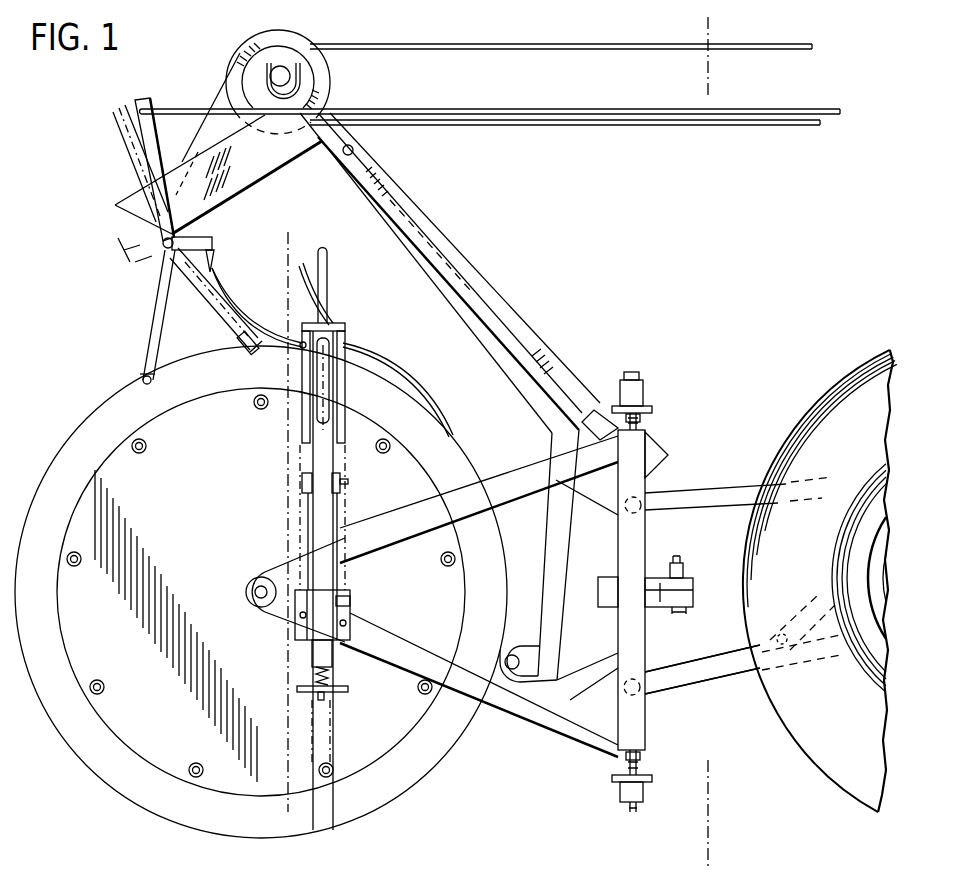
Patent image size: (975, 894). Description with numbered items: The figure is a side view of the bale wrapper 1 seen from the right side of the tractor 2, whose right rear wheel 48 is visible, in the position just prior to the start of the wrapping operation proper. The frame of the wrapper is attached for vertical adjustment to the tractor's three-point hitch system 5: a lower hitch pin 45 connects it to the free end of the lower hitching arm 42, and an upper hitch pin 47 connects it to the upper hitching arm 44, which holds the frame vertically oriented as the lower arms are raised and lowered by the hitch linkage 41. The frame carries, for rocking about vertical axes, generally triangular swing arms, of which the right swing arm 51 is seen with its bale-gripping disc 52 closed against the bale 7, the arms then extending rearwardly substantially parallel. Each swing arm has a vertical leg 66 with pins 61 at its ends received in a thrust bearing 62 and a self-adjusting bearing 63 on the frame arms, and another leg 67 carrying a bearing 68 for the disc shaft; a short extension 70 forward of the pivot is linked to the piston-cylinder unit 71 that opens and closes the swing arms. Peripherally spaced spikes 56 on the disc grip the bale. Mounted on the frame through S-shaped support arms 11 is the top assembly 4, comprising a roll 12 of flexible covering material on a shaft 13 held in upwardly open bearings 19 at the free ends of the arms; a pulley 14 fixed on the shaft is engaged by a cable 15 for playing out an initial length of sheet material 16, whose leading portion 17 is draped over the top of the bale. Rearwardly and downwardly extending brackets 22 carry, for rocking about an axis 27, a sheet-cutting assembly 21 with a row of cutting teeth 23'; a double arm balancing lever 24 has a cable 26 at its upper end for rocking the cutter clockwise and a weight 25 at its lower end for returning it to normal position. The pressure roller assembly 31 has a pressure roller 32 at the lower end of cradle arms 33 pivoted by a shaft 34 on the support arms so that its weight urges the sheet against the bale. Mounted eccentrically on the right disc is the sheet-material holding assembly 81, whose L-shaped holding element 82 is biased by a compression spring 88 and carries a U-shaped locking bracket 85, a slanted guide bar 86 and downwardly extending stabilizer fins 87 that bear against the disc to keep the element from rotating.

The implement 1 is at (645, 290).
The tractor 2 is at (735, 27).
The top assembly 4 is at (288, 232).
The upper arm 5 is at (512, 468).
The bale 7 is at (125, 802).
The S-shaped support arms 11 is at (518, 314).
The roll of flexible covering material 12 is at (305, 44).
The shaft 13 is at (280, 76).
The pulley 14 is at (316, 85).
The cable 15 is at (383, 45).
The upright bar 16 is at (168, 122).
The leading portion of the sheet material 17 is at (401, 390).
The shackle 19 is at (301, 72).
The sheet-cutting assembly 21 is at (212, 226).
The brackets 22 is at (260, 170).
The cutting teeth 23' is at (222, 252).
The double arm balancing lever 24 is at (150, 320).
The weight 25 is at (143, 378).
The cable 26 is at (190, 138).
The axis 27 is at (163, 242).
The pressure roller assembly 31 is at (542, 542).
The pressure roller 32 is at (512, 646).
The cradle arms 33 is at (500, 357).
The shaft 34 is at (354, 150).
The lower link 41 is at (708, 642).
The lower hitching arm 42 is at (680, 674).
The upper hitching arm 44 is at (712, 488).
The lower hitch pin 45 is at (640, 694).
The upper hitch pin 47 is at (642, 500).
The right rear wheel 48 is at (808, 750).
The right swing arm 51 is at (543, 708).
The right disc 52 is at (118, 750).
The peripherally spaced spikes 56 is at (132, 442).
The pins 61 is at (642, 425).
The thrust bearings 62 is at (650, 782).
The self-adjusting bearings 63 is at (645, 395).
The vertical legs 66 is at (646, 516).
The legs 67 is at (375, 580).
The bearings 68 is at (256, 580).
The short extensions 70 is at (658, 602).
The piston-cylinder unit 71 is at (697, 560).
The sheet-material holding assembly 81 is at (300, 348).
The L-shaped holding element 82 is at (330, 270).
The U-shaped locking bracket 85 is at (346, 335).
The slanted guide bar 86 is at (302, 293).
The stabilizer fins 87 is at (342, 403).
The compression spring 88 is at (315, 678).